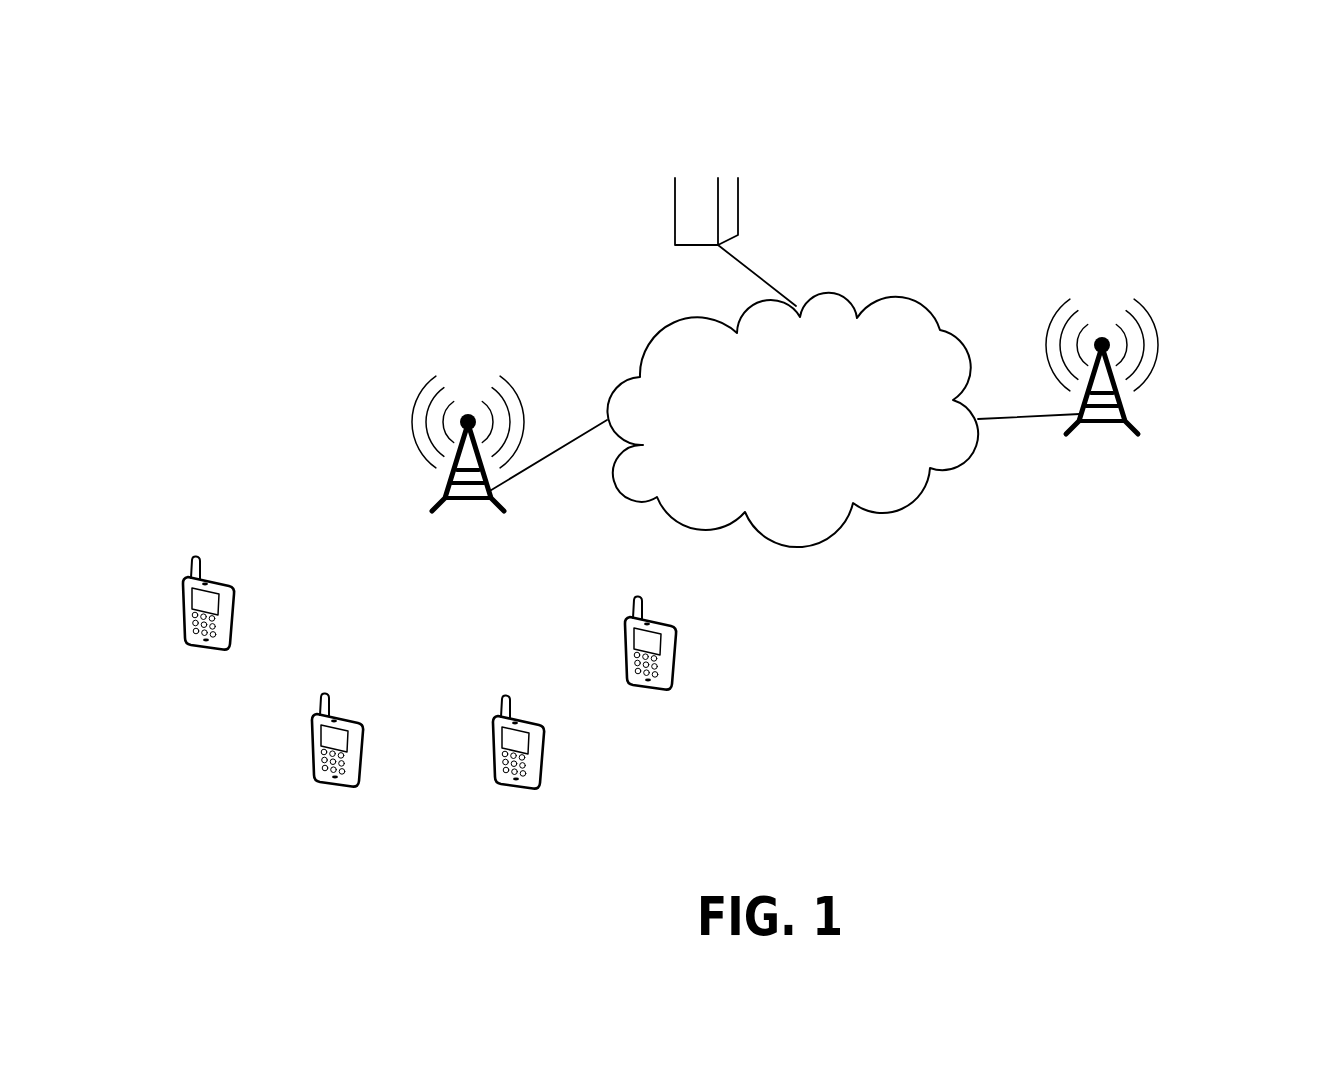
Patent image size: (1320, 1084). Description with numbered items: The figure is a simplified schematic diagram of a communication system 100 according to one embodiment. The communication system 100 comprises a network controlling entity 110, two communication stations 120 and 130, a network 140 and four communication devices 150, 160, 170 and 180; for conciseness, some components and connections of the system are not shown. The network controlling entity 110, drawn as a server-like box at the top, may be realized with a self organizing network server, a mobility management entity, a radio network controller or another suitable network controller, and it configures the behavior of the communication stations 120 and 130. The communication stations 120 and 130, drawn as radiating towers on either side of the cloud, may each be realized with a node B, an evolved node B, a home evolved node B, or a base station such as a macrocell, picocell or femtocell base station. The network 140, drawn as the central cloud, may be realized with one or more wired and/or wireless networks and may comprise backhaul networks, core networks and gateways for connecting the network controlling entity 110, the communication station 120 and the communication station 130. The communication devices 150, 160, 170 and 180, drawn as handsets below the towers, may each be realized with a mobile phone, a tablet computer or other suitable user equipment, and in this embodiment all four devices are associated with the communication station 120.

The communication system 100 is at (243, 178).
The network controlling entity 110 is at (763, 178).
The communication station 120 is at (443, 482).
The communication station 130 is at (1117, 406).
The network 140 is at (913, 500).
The communication device 150 is at (233, 620).
The communication device 160 is at (363, 755).
The communication device 170 is at (544, 757).
The communication device 180 is at (678, 655).